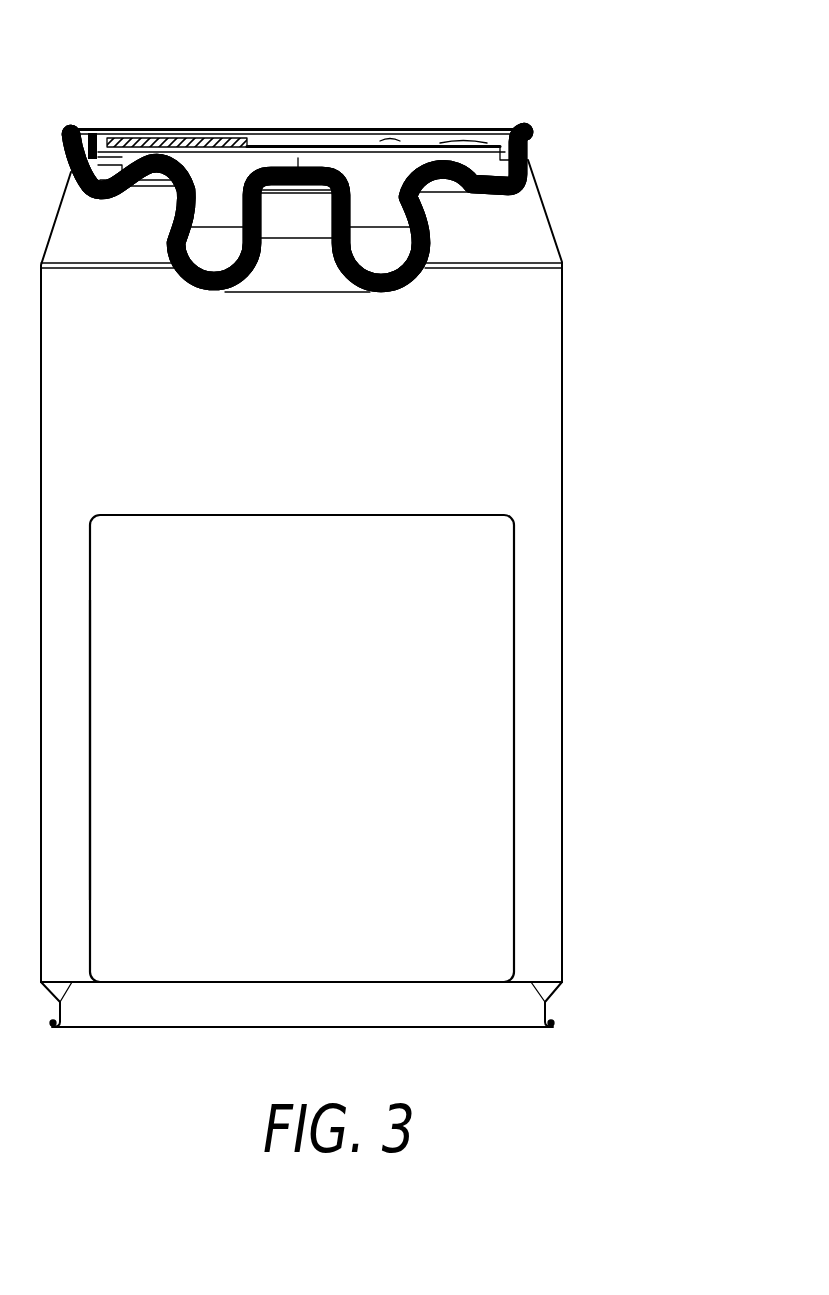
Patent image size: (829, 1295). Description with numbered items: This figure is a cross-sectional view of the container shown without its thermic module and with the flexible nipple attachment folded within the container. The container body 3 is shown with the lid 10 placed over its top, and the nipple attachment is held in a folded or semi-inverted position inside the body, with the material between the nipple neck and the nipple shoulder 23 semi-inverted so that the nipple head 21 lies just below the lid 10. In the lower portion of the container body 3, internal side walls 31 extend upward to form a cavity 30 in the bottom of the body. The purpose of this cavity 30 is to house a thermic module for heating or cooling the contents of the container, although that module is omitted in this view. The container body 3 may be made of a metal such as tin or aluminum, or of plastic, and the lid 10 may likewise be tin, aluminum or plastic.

The container body 3 is at (604, 530).
The lid 10 is at (349, 154).
The nipple head 21 is at (347, 175).
The nipple shoulder 23 is at (432, 233).
The cavity 30 is at (312, 844).
The internal side walls 31 is at (91, 735).